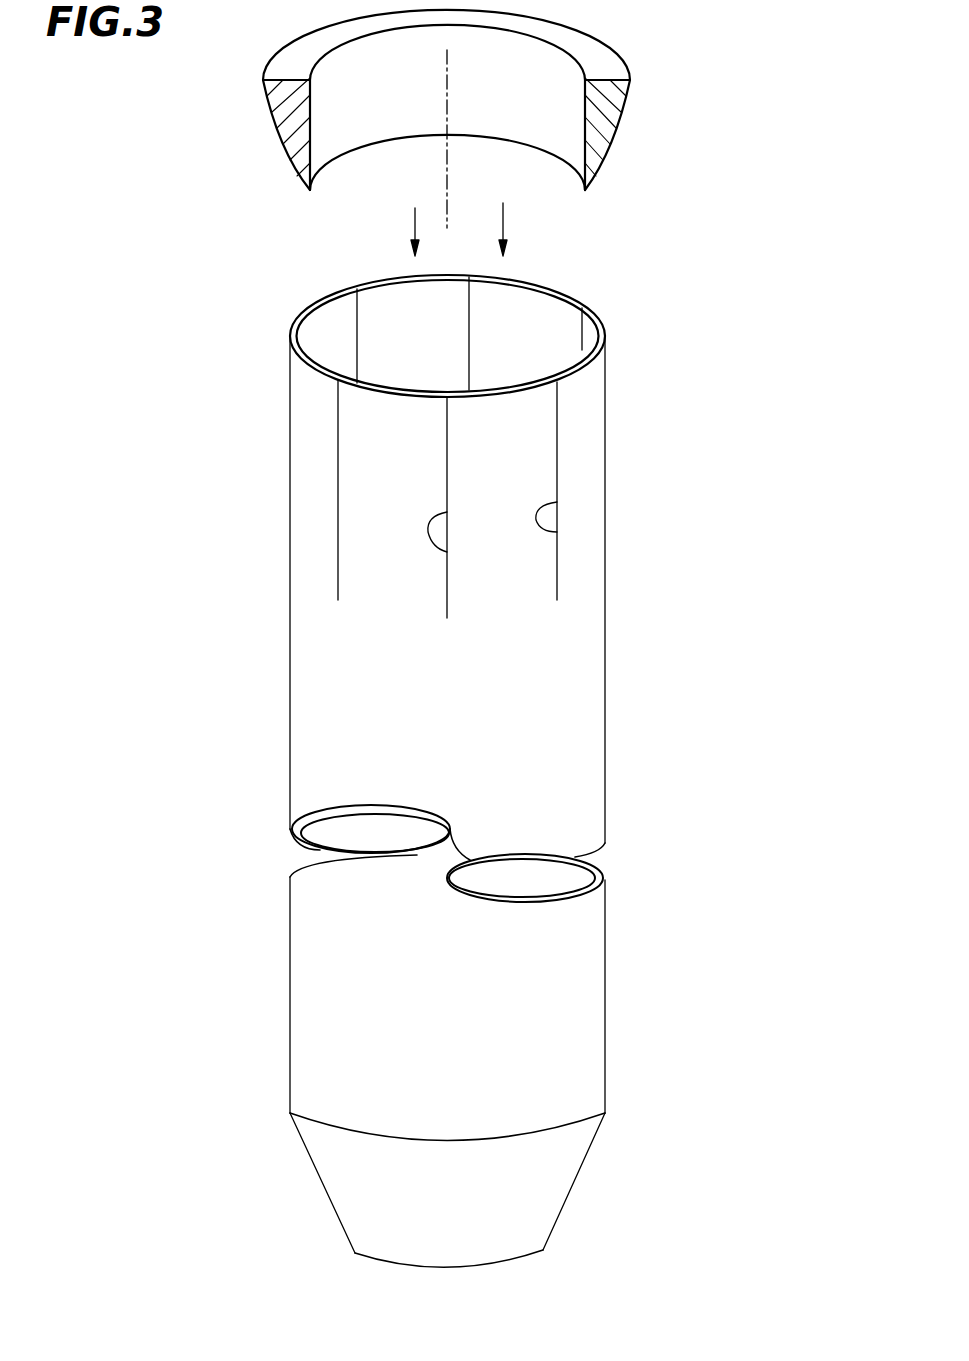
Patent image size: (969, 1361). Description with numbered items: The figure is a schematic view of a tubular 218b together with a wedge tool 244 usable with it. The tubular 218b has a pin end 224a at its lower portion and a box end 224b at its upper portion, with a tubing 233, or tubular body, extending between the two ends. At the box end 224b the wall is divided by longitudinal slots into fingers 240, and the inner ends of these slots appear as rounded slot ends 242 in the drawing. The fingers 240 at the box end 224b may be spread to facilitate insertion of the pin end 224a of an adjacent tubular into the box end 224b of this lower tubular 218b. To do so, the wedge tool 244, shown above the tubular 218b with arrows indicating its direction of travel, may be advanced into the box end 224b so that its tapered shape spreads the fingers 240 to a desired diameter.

The wedge tool 244 is at (727, 82).
The tubular 218b is at (221, 398).
The box end 224b is at (444, 588).
The pin end 224a is at (323, 1192).
The tubing 233 is at (607, 710).
The fingers 240 is at (523, 457).
The slot ends 242 is at (447, 552).